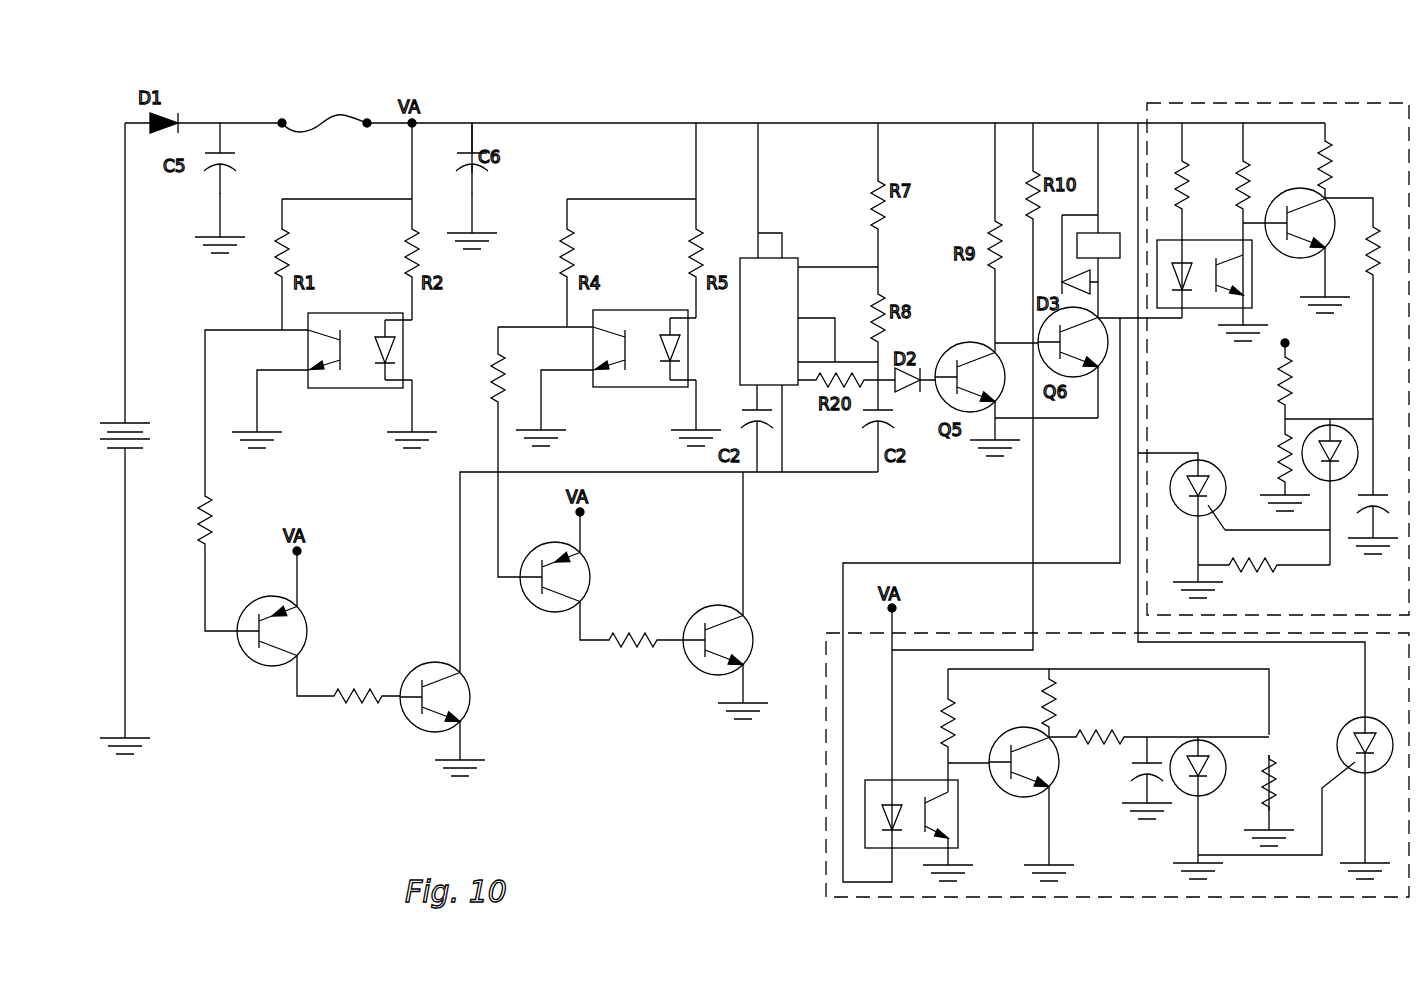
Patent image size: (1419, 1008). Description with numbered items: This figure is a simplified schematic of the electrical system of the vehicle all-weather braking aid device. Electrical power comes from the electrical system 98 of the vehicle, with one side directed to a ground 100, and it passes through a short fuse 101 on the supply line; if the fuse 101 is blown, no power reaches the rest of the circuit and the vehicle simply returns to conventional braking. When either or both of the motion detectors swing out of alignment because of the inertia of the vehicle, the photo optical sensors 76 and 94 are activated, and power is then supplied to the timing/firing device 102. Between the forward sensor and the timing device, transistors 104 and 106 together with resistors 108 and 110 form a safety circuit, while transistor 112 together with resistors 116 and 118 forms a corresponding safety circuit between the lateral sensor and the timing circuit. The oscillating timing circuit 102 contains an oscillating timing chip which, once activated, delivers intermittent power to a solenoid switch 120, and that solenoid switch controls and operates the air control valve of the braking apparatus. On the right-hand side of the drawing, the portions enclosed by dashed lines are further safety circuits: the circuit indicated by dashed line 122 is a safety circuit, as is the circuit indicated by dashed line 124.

The photo optical sensor 76 is at (342, 393).
The photo optical sensor 94 is at (640, 310).
The electrical system 98 is at (117, 420).
The ground 100 is at (115, 738).
The short fuse 101 is at (325, 118).
The timing/firing device 102 is at (795, 258).
The transistor 104 is at (272, 668).
The transistor 106 is at (435, 732).
The resistor 108 is at (222, 518).
The resistor 110 is at (360, 708).
The transistor 112 is at (555, 614).
The resistor 116 is at (510, 340).
The resistor 118 is at (620, 655).
The solenoid switch 120 is at (1108, 233).
The safety circuit 122 is at (1197, 103).
The safety circuit 124 is at (826, 850).